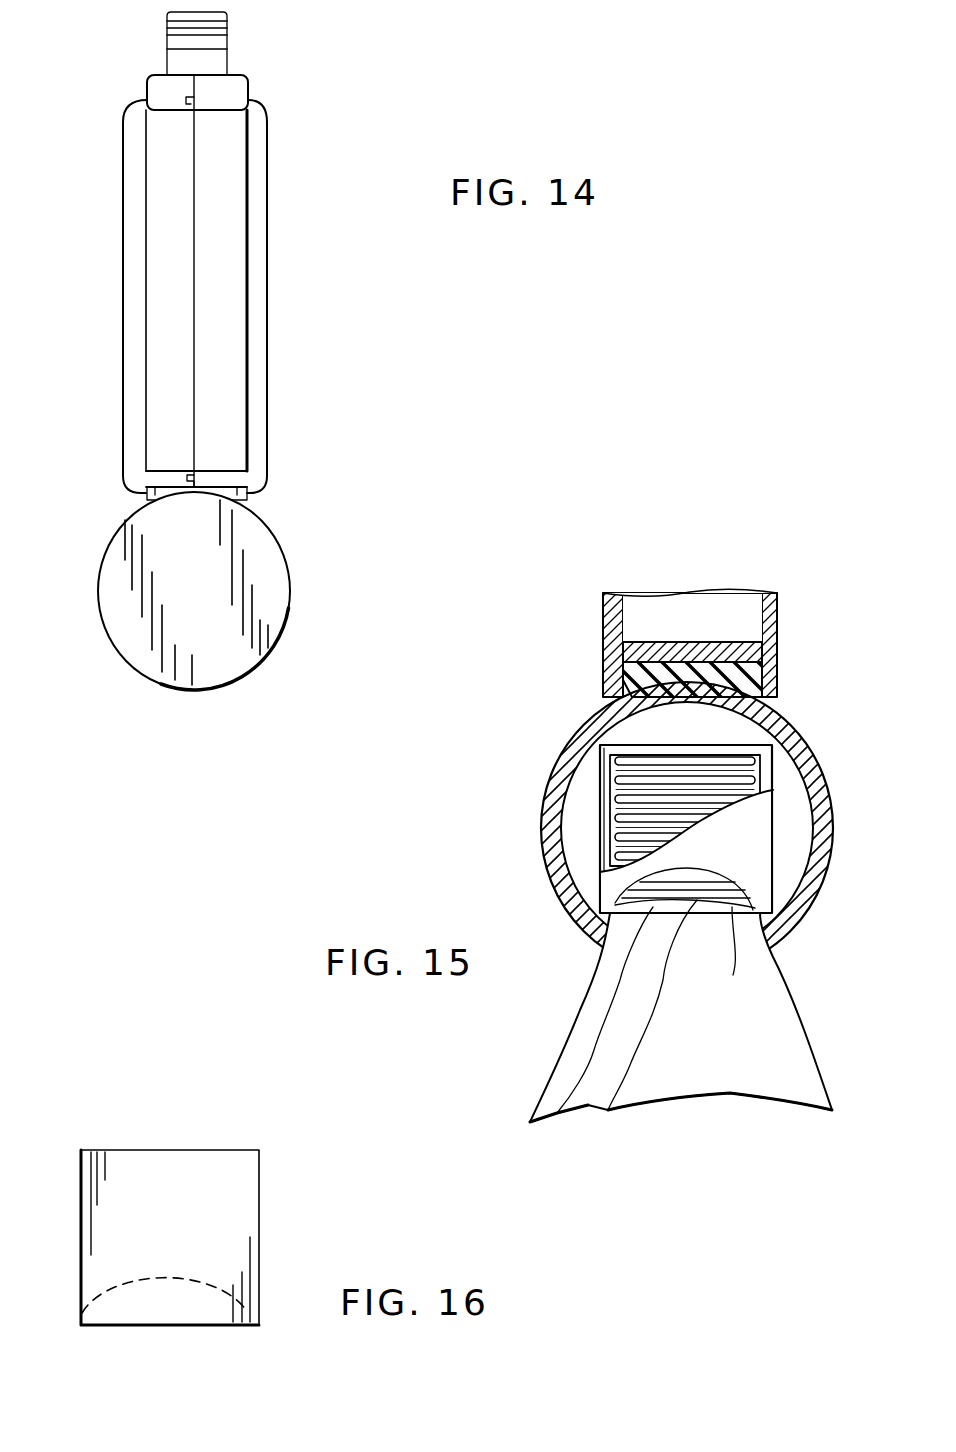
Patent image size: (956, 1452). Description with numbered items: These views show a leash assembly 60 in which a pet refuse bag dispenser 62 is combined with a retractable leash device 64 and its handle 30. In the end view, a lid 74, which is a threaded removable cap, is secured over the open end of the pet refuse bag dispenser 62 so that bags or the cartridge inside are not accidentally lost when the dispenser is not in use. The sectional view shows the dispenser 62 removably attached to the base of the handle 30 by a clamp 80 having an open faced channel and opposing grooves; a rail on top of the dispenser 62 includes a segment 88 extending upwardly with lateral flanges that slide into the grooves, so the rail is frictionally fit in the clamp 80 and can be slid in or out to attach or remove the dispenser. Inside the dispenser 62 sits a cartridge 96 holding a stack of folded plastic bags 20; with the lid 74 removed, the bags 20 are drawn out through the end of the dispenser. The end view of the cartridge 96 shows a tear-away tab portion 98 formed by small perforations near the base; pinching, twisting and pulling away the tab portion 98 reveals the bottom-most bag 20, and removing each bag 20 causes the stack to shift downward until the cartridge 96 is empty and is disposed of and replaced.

In FIG. 14, the leash assembly 60 is at (92, 128).
In FIG. 14, the handle 30 is at (232, 215).
In FIG. 14, the retractable leash device 64 is at (268, 313).
In FIG. 14, the lid 74 is at (257, 575).
In FIG. 14, the pet refuse bag dispenser 62 is at (112, 654).
In FIG. 15, the pet refuse bag dispenser 62 is at (833, 887).
In FIG. 15, the clamp 80 is at (777, 628).
In FIG. 15, the segment 88 is at (735, 718).
In FIG. 15, the cartridge 96 is at (600, 800).
In FIG. 16, the cartridge 96 is at (167, 1150).
In FIG. 15, the plastic bag 20 is at (790, 1053).
In FIG. 16, the tear-away tab portion 98 is at (175, 1300).